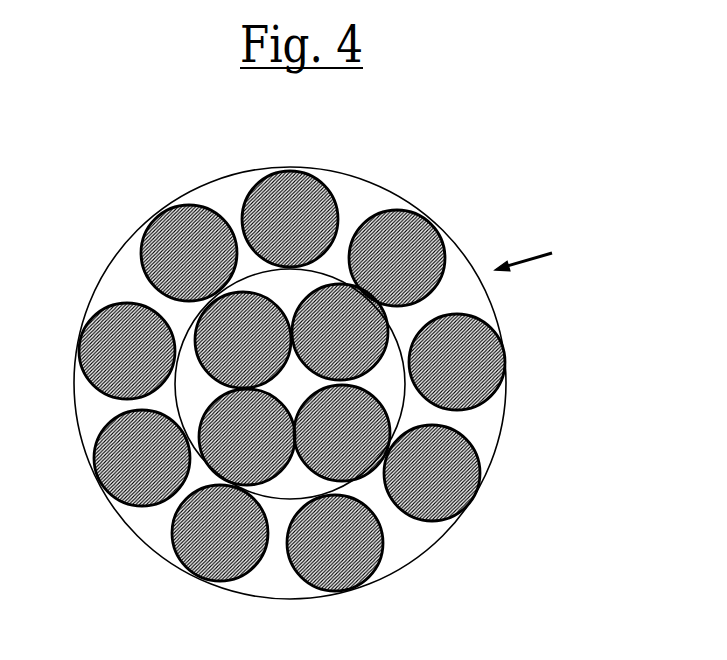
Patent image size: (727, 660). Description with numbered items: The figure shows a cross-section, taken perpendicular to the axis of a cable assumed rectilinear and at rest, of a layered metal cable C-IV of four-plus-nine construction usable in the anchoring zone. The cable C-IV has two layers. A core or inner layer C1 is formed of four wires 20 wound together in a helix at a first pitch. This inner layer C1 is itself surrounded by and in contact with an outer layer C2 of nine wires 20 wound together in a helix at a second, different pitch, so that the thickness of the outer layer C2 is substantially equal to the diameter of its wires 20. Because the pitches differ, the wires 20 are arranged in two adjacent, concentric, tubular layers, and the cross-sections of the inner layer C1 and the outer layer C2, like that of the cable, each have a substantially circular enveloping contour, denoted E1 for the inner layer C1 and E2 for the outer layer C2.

The wires 20 is at (342, 335).
The contour of inner layer E1 is at (193, 320).
The contour of outer layer E2 is at (420, 555).
The inner layer C1 is at (382, 390).
The outer layer C2 is at (271, 361).
The cable C-IV is at (553, 252).